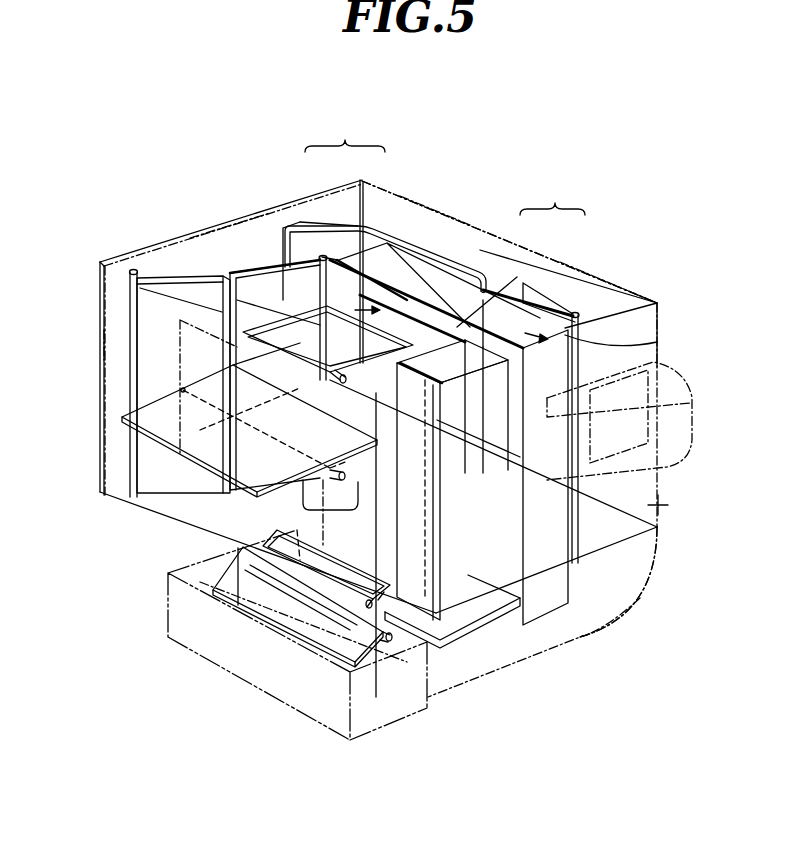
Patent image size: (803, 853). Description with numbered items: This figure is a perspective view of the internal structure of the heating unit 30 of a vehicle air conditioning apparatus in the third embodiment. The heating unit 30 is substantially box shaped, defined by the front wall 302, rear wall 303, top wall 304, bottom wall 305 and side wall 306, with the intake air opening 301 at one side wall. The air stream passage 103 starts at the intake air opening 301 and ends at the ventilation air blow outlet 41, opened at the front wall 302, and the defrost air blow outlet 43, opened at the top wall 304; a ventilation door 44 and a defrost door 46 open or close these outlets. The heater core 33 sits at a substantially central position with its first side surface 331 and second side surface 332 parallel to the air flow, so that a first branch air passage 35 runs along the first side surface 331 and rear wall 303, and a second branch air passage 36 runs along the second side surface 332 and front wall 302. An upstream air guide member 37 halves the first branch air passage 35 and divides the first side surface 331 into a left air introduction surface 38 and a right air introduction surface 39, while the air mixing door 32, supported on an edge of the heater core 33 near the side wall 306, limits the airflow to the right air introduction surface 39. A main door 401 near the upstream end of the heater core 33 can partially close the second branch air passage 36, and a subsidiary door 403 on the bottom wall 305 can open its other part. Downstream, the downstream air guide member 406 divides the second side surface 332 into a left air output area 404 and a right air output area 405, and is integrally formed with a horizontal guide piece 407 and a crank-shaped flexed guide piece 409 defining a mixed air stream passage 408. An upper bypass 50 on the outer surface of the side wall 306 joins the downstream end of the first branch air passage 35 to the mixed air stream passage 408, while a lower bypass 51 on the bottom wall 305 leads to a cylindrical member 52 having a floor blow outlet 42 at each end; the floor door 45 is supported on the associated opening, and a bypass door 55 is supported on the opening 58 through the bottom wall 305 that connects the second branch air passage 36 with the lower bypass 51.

The heating unit 30 is at (494, 215).
The air stream passage 103 is at (509, 220).
The second branch air passage 36 is at (172, 282).
The intake air opening 301 is at (215, 232).
The front wall 302 is at (105, 345).
The rear wall 303 is at (624, 290).
The top wall 304 is at (428, 225).
The bottom wall 305 is at (122, 505).
The side wall 306 is at (668, 505).
The lower bypass 51 is at (572, 622).
The floor blow outlet 42 is at (285, 240).
The cylindrical member 52 is at (282, 672).
The ventilation air blow outlet 41 is at (180, 377).
The subsidiary door 403 is at (187, 300).
The main door 401 is at (273, 300).
The defrost air blow outlet 43 is at (247, 300).
The defrost door 46 is at (273, 300).
The ventilation door 44 is at (122, 417).
The horizontal guide piece 407 is at (300, 383).
The downstream air guide member 406 is at (401, 295).
The right air output area 405 is at (415, 328).
The left air output area 404 is at (338, 268).
The second side surface 332 is at (345, 134).
The flexed guide piece 409 is at (443, 595).
The mixed air stream passage 408 is at (472, 575).
The left air introduction surface 38 is at (462, 275).
The right air introduction surface 39 is at (517, 277).
The first side surface 331 is at (557, 197).
The upstream air guide member 37 is at (452, 257).
The first branch air passage 35 is at (402, 225).
The air mixing door 32 is at (557, 302).
The heater core 33 is at (585, 337).
The upper bypass 50 is at (680, 427).
The opening 58 is at (250, 553).
The floor door 45 is at (222, 585).
The bypass door 55 is at (327, 538).